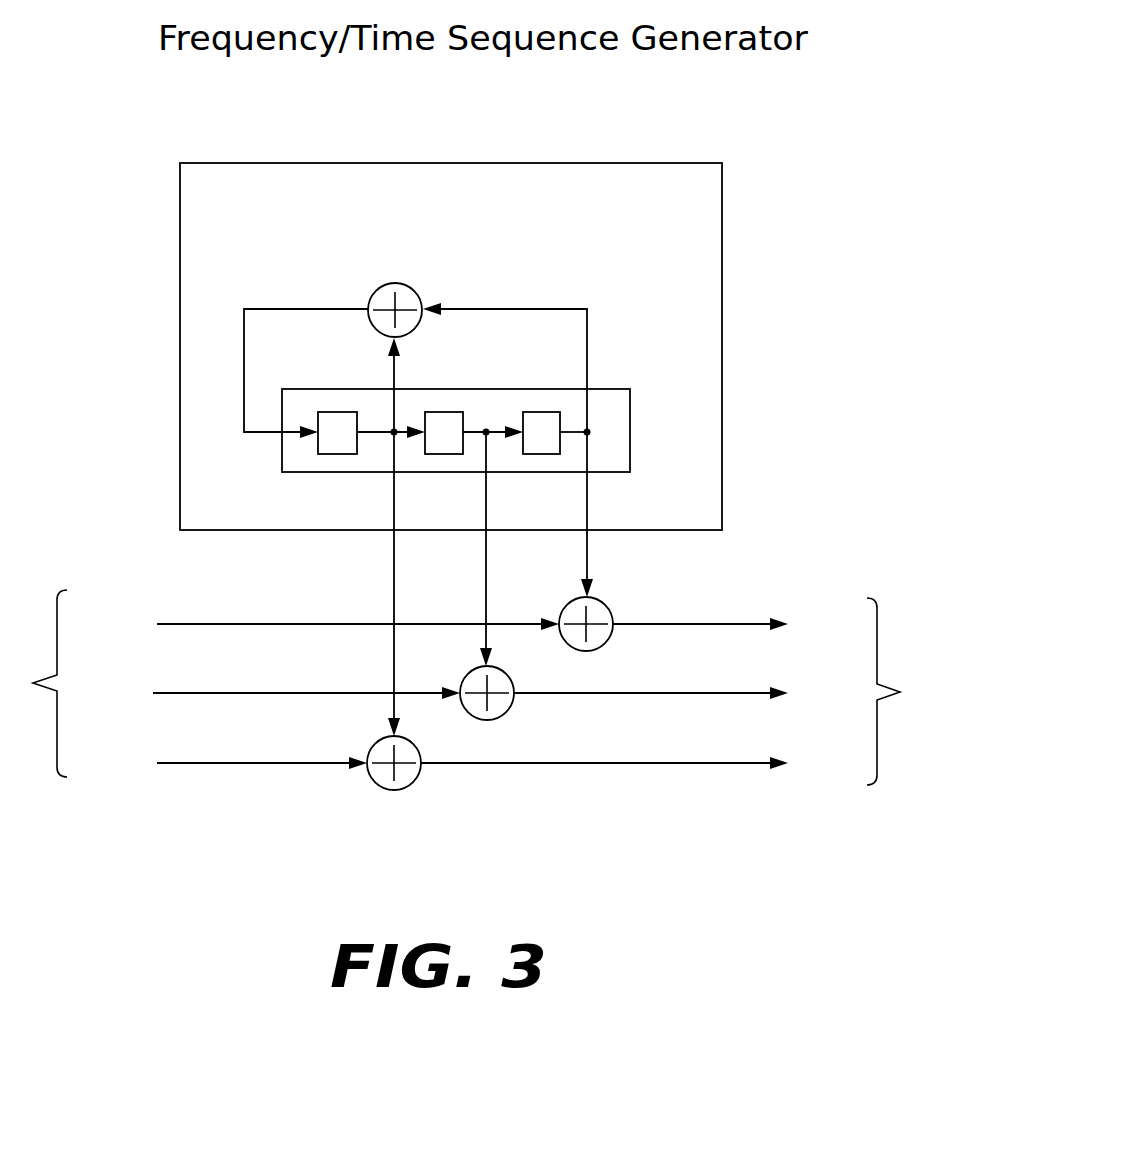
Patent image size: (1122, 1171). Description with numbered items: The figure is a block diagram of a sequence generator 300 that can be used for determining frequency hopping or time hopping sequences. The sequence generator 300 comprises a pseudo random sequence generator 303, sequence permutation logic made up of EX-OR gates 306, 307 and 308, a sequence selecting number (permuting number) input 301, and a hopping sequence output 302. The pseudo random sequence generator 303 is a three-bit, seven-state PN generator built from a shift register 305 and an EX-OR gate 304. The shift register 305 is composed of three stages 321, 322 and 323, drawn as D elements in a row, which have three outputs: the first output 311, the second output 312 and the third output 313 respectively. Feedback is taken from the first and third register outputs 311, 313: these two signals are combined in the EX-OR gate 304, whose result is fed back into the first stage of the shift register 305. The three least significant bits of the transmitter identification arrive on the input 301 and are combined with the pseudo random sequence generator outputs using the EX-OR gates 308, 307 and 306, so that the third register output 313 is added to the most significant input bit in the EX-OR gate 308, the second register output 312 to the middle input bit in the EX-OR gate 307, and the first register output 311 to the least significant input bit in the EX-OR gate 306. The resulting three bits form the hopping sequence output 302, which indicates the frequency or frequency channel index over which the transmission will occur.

The sequence generator 300 is at (884, 149).
The sequence selecting number input 301 is at (60, 590).
The hopping sequence output 302 is at (879, 598).
The pseudo random sequence generator 303 is at (180, 335).
The EX-OR gate 304 is at (370, 302).
The shift register 305 is at (617, 389).
The EX-OR gate 306 is at (606, 640).
The EX-OR gate 307 is at (507, 712).
The EX-OR gate 308 is at (412, 783).
The output Q0 311 is at (590, 543).
The output Q1 312 is at (489, 543).
The output Q2 313 is at (397, 543).
The shift register stage 321 is at (543, 412).
The shift register stage 322 is at (452, 412).
The shift register stage 323 is at (345, 412).